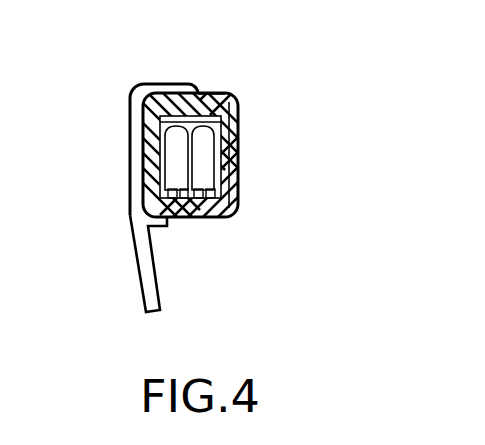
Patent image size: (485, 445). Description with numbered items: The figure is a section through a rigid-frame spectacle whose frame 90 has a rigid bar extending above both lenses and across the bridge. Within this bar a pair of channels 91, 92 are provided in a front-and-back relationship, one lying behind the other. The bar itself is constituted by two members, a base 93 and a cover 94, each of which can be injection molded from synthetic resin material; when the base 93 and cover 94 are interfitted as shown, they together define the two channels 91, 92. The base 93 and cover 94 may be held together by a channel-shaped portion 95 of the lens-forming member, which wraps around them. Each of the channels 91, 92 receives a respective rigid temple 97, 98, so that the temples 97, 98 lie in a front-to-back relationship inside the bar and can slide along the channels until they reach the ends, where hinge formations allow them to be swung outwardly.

The frame 90 is at (176, 171).
The channel 91 is at (174, 200).
The channel 92 is at (198, 198).
The base 93 is at (240, 184).
The cover 94 is at (222, 93).
The channel-shaped portion 95 is at (136, 210).
The temple 97 is at (170, 163).
The temple 98 is at (226, 150).